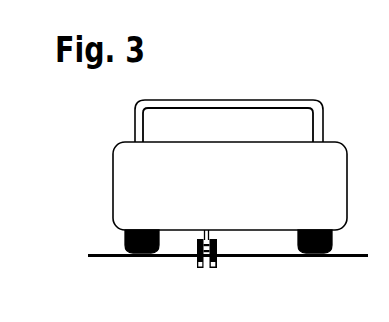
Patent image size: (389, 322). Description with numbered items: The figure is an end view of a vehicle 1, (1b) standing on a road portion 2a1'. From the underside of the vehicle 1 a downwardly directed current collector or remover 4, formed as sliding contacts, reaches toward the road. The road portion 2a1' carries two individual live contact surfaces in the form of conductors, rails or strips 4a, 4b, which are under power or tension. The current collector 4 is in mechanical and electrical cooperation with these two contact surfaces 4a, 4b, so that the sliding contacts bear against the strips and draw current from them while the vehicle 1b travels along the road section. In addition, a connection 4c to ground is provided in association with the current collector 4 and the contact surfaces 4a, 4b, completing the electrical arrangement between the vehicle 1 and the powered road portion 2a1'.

The vehicle 1 is at (184, 165).
The vehicle 1b is at (133, 169).
The road portion 2a1' is at (242, 263).
The current collector 4 is at (170, 253).
The contact surface 4a is at (215, 268).
The contact surface 4b is at (198, 268).
The connection to ground 4c is at (195, 252).